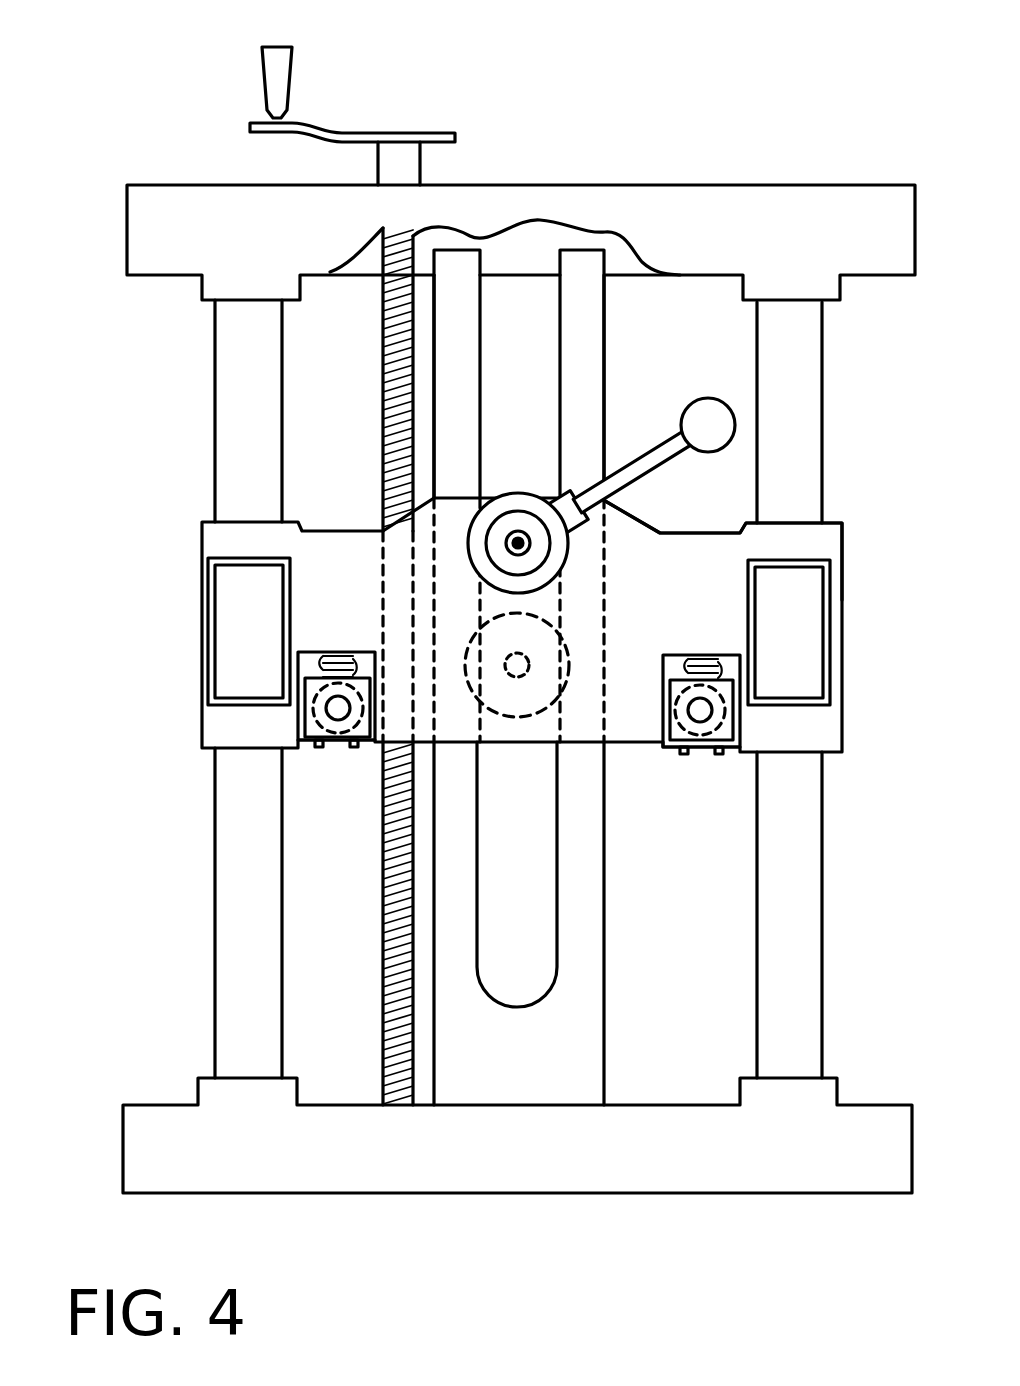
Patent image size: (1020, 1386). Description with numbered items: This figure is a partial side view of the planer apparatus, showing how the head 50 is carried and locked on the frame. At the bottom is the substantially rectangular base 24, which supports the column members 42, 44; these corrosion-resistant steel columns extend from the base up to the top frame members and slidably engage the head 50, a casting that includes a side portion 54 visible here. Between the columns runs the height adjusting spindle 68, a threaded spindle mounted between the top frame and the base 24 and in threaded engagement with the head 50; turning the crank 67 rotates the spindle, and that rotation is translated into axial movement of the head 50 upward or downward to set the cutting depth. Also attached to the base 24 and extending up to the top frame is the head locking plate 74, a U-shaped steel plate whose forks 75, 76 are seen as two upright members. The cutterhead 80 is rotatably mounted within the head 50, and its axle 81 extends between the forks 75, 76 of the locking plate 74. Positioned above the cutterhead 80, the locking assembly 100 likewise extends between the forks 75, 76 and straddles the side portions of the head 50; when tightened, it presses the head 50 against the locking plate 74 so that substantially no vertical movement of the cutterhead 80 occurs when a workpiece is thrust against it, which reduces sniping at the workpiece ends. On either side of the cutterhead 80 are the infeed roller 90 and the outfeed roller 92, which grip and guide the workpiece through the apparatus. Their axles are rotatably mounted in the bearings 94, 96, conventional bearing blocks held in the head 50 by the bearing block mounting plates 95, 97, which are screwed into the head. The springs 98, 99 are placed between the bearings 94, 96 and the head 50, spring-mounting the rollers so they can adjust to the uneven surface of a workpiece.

The base 24 is at (860, 1178).
The column member 42 is at (228, 962).
The column member 44 is at (813, 960).
The head 50 is at (148, 653).
The side portion 54 is at (672, 562).
The crank 67 is at (333, 68).
The height adjusting spindle 68 is at (380, 1003).
The head locking plate 74 is at (540, 1065).
The fork 75 is at (580, 265).
The fork 76 is at (460, 262).
The cutterhead 80 is at (507, 700).
The axle 81 is at (521, 680).
The infeed roller 90 is at (338, 722).
The outfeed roller 92 is at (705, 722).
The bearing 94 is at (316, 683).
The bearing block mounting plate 95 is at (318, 748).
The bearing 96 is at (677, 683).
The bearing block mounting plate 97 is at (673, 752).
The spring 98 is at (362, 662).
The spring 99 is at (725, 660).
The locking assembly 100 is at (542, 488).